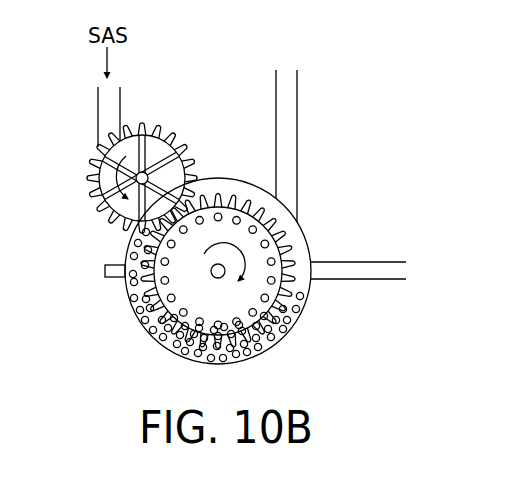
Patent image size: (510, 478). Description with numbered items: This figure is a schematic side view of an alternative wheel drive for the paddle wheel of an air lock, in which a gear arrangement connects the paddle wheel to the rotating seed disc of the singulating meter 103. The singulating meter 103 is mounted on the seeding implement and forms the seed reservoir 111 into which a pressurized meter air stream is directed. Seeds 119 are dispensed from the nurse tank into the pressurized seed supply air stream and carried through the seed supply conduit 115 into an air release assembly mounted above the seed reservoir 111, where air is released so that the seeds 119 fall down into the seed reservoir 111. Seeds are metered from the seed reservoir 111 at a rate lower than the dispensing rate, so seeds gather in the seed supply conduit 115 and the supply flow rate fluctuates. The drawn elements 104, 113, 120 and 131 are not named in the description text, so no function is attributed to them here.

The singulating meter 103 is at (273, 342).
The gear wheel 104 is at (270, 290).
The seed reservoir 111 is at (137, 308).
The outlet channel 113 is at (297, 122).
The seed supply conduit 115 is at (120, 107).
The seeds 119 is at (157, 343).
The inlet port 120 is at (105, 271).
The outlet port 131 is at (350, 262).